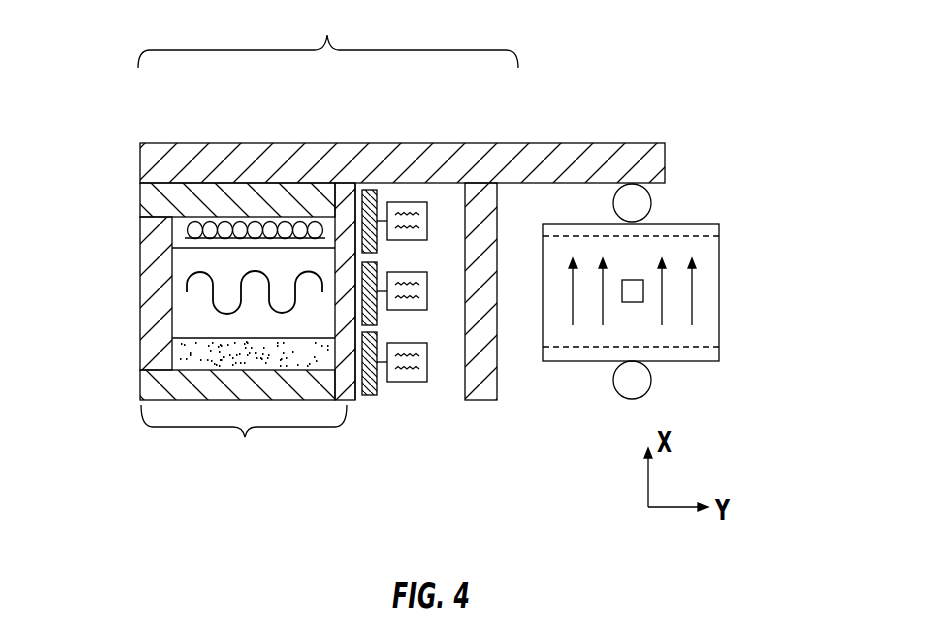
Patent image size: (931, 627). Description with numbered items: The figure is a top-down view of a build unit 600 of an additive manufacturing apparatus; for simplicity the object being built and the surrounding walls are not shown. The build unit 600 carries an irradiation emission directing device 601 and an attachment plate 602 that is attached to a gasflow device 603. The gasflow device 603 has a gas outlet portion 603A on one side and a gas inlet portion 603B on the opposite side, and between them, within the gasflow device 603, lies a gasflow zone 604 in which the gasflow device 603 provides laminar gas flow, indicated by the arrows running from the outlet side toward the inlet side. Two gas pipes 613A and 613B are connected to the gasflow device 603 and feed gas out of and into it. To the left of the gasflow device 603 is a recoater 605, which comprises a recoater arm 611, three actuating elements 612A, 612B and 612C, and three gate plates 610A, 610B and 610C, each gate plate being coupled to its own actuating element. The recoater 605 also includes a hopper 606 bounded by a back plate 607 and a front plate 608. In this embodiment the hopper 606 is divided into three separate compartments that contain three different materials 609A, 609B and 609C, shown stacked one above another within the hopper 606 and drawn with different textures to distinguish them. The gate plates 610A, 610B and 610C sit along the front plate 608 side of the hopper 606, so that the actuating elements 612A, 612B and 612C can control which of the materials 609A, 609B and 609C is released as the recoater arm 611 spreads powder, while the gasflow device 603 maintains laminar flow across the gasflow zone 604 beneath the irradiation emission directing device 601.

The build unit 600 is at (712, 136).
The irradiation emission directing device 601 is at (630, 280).
The attachment plate 602 is at (325, 143).
The gasflow device 603 is at (720, 310).
The gas outlet portion 603A is at (712, 352).
The gas inlet portion 603B is at (712, 230).
The gasflow zone 604 is at (590, 318).
The recoater 605 is at (328, 34).
The hopper 606 is at (244, 439).
The back plate 607 is at (140, 270).
The front plate 608 is at (348, 401).
The first material 609A is at (178, 238).
The second material 609B is at (187, 290).
The third material 609C is at (175, 362).
The first gate plate 610A is at (368, 395).
The second gate plate 610B is at (378, 266).
The third gate plate 610C is at (370, 190).
The recoater arm 611 is at (497, 395).
The first actuating element 612A is at (400, 383).
The second actuating element 612B is at (410, 310).
The third actuating element 612C is at (405, 202).
The first gas pipe 613A is at (652, 203).
The second gas pipe 613B is at (652, 380).